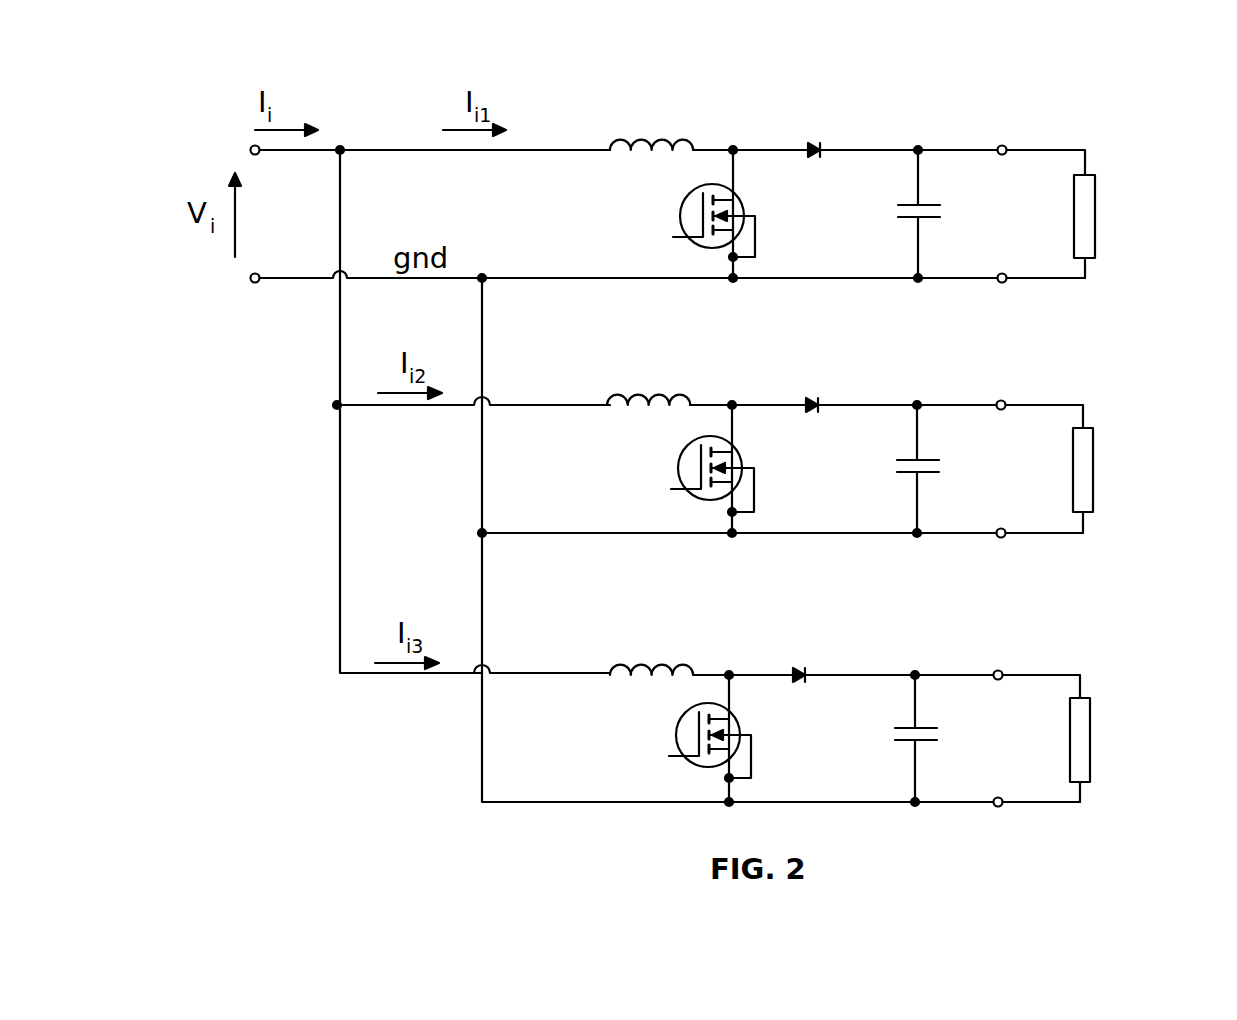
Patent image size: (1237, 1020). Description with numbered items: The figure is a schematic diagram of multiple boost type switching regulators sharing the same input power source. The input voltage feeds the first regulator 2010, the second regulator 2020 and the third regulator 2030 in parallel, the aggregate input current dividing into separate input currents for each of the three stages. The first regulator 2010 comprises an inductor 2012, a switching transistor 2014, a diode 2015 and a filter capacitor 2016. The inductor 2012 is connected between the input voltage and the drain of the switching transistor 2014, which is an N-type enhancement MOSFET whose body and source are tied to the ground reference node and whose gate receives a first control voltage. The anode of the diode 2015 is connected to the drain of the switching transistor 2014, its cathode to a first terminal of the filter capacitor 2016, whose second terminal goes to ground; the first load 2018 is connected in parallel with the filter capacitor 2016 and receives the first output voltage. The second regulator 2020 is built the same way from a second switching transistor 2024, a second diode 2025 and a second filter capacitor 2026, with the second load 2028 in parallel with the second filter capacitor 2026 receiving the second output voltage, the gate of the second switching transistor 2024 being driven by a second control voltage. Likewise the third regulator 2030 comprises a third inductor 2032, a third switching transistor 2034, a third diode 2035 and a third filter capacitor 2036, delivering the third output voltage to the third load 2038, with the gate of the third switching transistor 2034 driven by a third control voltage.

The first regulator 2010 is at (989, 72).
The inductor L1 2012 is at (612, 130).
The switching transistor S1 2014 is at (743, 214).
The diode 2015 is at (818, 130).
The filter capacitor C1 2016 is at (938, 217).
The load LOAD1 2018 is at (1107, 172).
The second regulator 2020 is at (1021, 330).
The switching transistor S2 2024 is at (742, 466).
The diode 2025 is at (826, 390).
The filter capacitor C2 2026 is at (937, 472).
The load LOAD2 2028 is at (1103, 428).
The third regulator 2030 is at (1014, 598).
The inductor L3 2032 is at (610, 655).
The switching transistor S3 2034 is at (738, 725).
The diode 2035 is at (812, 660).
The filter capacitor C3 2036 is at (935, 740).
The load LOAD3 2038 is at (1100, 698).